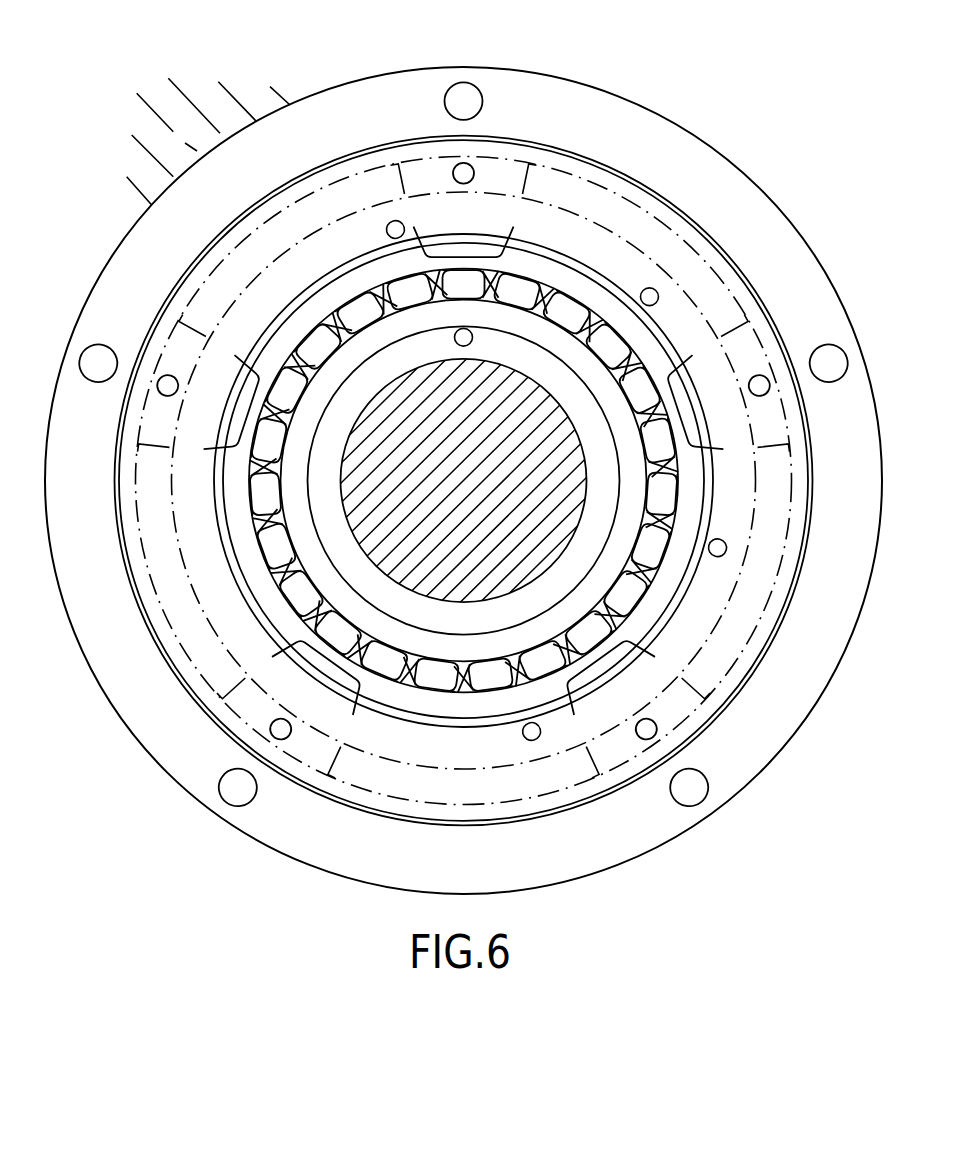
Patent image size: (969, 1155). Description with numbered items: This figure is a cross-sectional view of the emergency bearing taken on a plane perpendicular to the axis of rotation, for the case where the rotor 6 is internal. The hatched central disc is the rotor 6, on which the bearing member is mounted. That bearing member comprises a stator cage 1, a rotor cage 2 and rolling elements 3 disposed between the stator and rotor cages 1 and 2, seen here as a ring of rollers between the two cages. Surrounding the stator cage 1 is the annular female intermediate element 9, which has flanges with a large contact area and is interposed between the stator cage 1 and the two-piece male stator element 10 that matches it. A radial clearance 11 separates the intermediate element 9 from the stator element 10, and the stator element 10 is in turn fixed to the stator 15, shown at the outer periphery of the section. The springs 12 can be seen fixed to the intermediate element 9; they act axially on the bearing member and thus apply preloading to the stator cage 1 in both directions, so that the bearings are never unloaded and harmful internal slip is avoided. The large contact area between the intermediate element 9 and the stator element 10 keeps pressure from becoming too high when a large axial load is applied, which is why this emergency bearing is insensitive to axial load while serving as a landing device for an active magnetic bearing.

The stator cage 1 is at (644, 343).
The rotor cage 2 is at (600, 582).
The rolling elements 3 is at (307, 602).
The rotor 6 is at (467, 493).
The annular female intermediate element 9 is at (488, 148).
The two-piece male stator element 10 is at (675, 156).
The radial clearance 11 is at (539, 140).
The springs 12 is at (378, 171).
The stator 15 is at (174, 133).